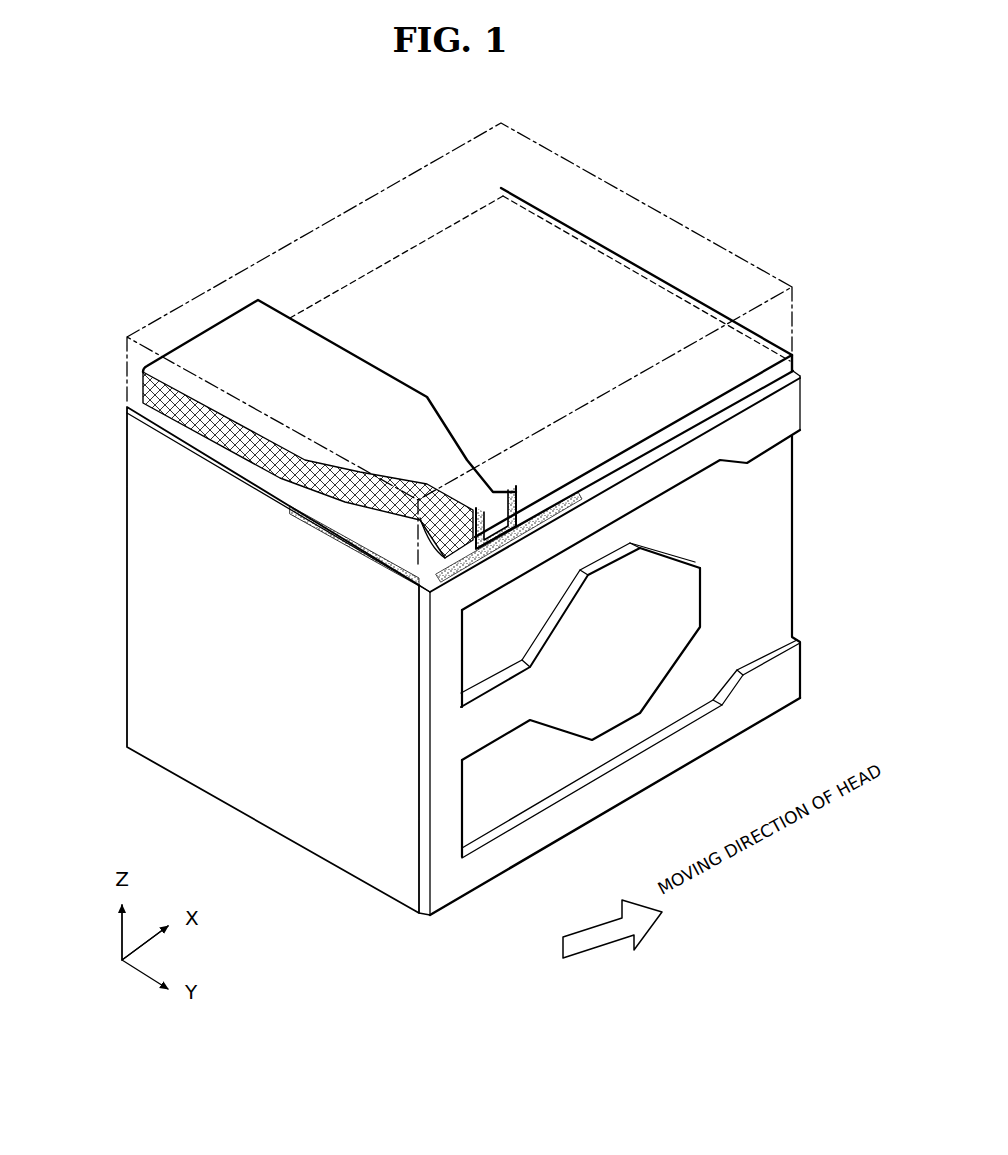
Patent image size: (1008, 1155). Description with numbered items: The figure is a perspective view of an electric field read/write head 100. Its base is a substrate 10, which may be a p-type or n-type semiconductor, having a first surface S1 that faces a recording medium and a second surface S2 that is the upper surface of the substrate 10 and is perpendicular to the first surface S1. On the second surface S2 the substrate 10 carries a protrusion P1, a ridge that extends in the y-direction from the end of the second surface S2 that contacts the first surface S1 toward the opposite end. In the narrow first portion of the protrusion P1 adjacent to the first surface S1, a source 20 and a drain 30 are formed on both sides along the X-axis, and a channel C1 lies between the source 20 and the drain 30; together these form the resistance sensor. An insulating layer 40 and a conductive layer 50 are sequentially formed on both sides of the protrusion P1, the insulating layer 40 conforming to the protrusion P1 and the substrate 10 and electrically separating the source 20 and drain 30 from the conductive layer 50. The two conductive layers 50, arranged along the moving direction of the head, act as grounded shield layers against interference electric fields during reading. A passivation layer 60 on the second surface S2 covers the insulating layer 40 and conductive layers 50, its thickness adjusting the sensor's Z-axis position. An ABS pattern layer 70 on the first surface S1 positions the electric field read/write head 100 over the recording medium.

The electric field read/write head 100 is at (105, 280).
The substrate 10 is at (773, 577).
The source 20 is at (443, 555).
The drain 30 is at (553, 493).
The insulating layer 40 is at (792, 355).
The conductive layer 50 is at (305, 318).
The passivation layer 60 is at (782, 313).
The air bearing surface (ABS) pattern layer 70 is at (795, 675).
The protrusion P1 is at (233, 340).
The first surface S1 is at (758, 506).
The second surface S2 is at (606, 308).
The channel C1 is at (486, 505).